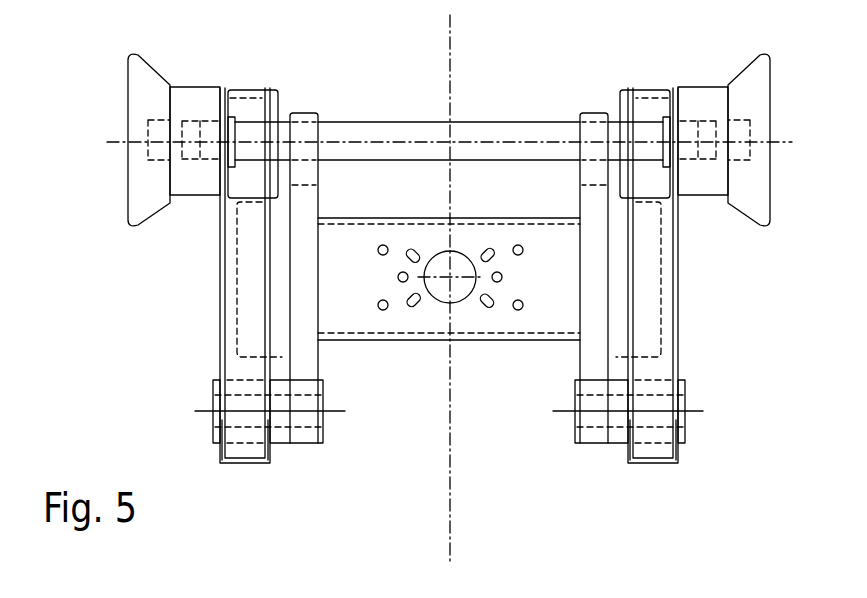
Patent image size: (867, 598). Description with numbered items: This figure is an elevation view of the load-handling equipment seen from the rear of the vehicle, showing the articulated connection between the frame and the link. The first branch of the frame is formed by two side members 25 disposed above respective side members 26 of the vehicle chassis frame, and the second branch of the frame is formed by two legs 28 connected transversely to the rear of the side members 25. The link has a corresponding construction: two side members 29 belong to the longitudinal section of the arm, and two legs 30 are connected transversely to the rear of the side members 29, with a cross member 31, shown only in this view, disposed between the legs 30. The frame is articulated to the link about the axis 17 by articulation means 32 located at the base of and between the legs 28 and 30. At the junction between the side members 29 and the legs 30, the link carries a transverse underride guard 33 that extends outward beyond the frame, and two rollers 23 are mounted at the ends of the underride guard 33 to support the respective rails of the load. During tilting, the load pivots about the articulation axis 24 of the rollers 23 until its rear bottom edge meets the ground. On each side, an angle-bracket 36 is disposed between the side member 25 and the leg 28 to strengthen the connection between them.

The axis 17 is at (210, 410).
The rollers 23 is at (150, 76).
The articulation axis 24 is at (114, 141).
The side members 25 is at (272, 88).
The side members 26 is at (240, 315).
The legs 28 is at (232, 365).
The side members 29 is at (305, 112).
The legs 30 is at (320, 198).
The cross member 31 is at (541, 322).
The articulation means 32 is at (296, 454).
The underride guard 33 is at (378, 122).
The angle-bracket 36 is at (228, 250).